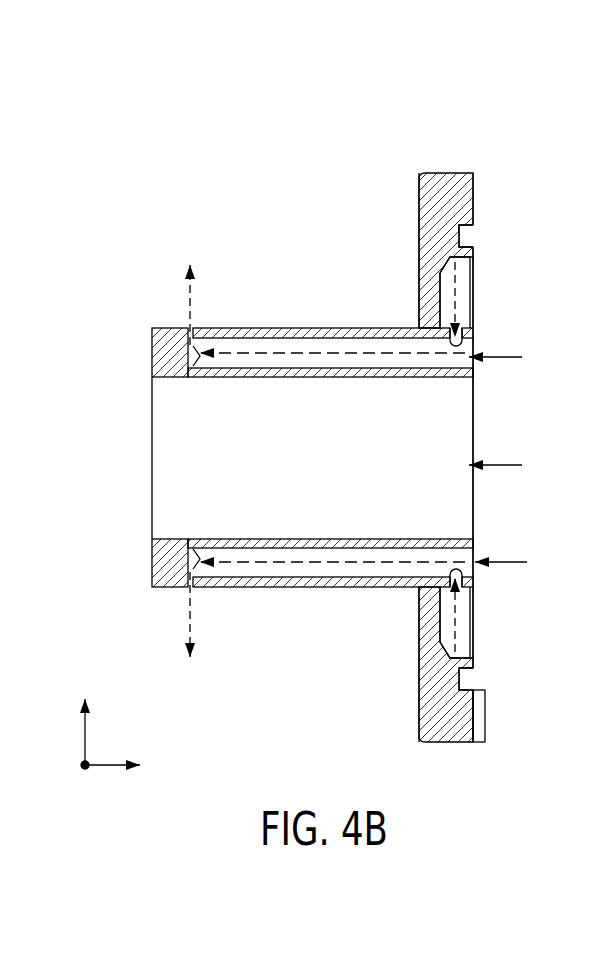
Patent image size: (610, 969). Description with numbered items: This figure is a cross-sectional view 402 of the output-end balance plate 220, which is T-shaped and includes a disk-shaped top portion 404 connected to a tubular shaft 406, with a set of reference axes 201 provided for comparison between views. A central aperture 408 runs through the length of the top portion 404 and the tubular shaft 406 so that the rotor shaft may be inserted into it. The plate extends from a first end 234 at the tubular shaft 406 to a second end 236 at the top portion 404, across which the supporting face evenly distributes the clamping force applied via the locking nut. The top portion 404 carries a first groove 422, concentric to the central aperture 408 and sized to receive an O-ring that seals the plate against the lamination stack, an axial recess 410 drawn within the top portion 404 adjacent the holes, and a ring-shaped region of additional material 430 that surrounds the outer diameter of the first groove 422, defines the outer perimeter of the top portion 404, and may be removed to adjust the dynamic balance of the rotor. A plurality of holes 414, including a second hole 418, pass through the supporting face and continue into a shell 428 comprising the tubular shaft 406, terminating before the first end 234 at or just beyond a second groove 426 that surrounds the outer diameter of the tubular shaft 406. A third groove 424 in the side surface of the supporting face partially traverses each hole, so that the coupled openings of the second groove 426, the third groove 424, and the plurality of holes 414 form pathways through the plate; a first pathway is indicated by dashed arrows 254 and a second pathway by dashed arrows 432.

The cross-sectional view 402 is at (292, 81).
The output-end balance plate 220 is at (446, 172).
The top portion 404 is at (436, 215).
The second end 236 is at (474, 213).
The first groove 422 is at (474, 231).
The recess 410 is at (464, 294).
The third groove 424 is at (466, 339).
The second hole 418 is at (513, 356).
The tubular shaft 406 is at (250, 328).
The dashed arrows 254 is at (305, 353).
The dashed arrows 432 is at (344, 539).
The first end 234 is at (151, 345).
The shell 428 is at (172, 575).
The second groove 426 is at (189, 330).
The central aperture 408 is at (513, 465).
The plurality of holes 414 is at (520, 561).
The region of additional material 430 is at (488, 720).
The reference axes 201 is at (128, 716).